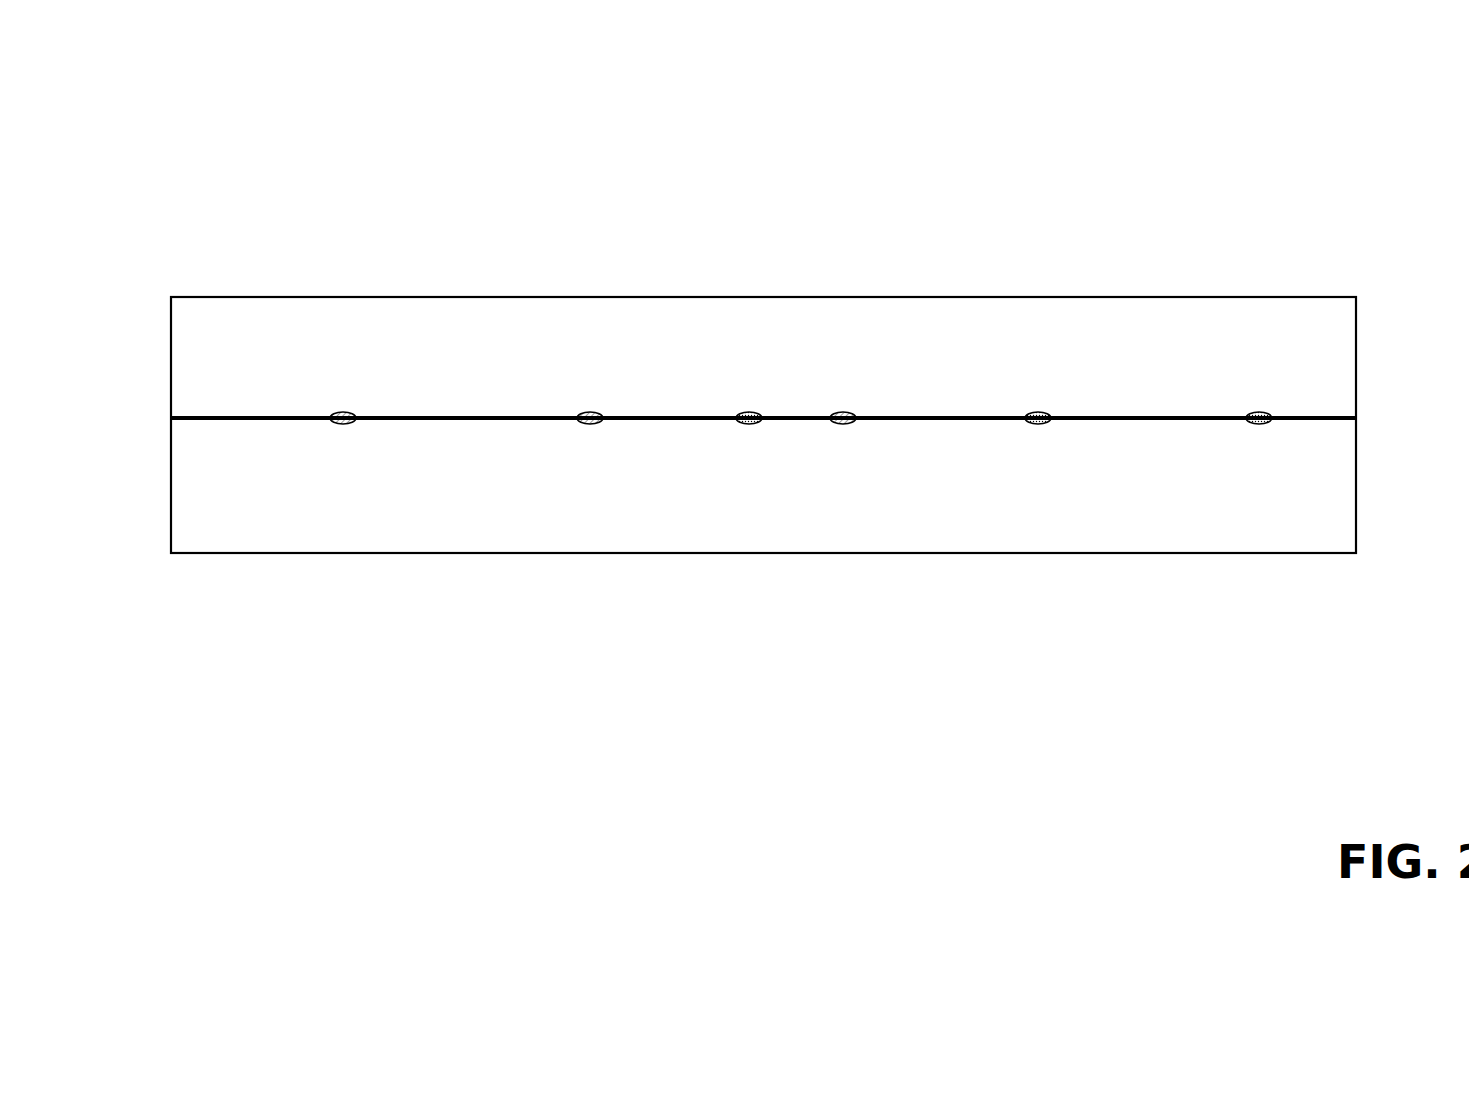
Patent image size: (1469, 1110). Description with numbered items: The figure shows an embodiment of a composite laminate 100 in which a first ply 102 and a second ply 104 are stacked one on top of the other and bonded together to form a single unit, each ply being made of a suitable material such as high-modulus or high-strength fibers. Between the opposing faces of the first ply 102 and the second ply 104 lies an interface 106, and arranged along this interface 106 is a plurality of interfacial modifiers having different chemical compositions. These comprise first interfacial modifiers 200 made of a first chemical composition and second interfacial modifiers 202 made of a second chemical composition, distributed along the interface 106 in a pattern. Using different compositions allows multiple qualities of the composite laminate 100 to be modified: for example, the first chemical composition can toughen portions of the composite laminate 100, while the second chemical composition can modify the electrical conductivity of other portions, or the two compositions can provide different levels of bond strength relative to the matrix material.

The composite laminate 100 is at (996, 105).
The first ply 102 is at (492, 553).
The second ply 104 is at (255, 368).
The interface 106 is at (667, 418).
The first interfacial modifiers 200 is at (341, 424).
The second interfacial modifiers 202 is at (747, 424).